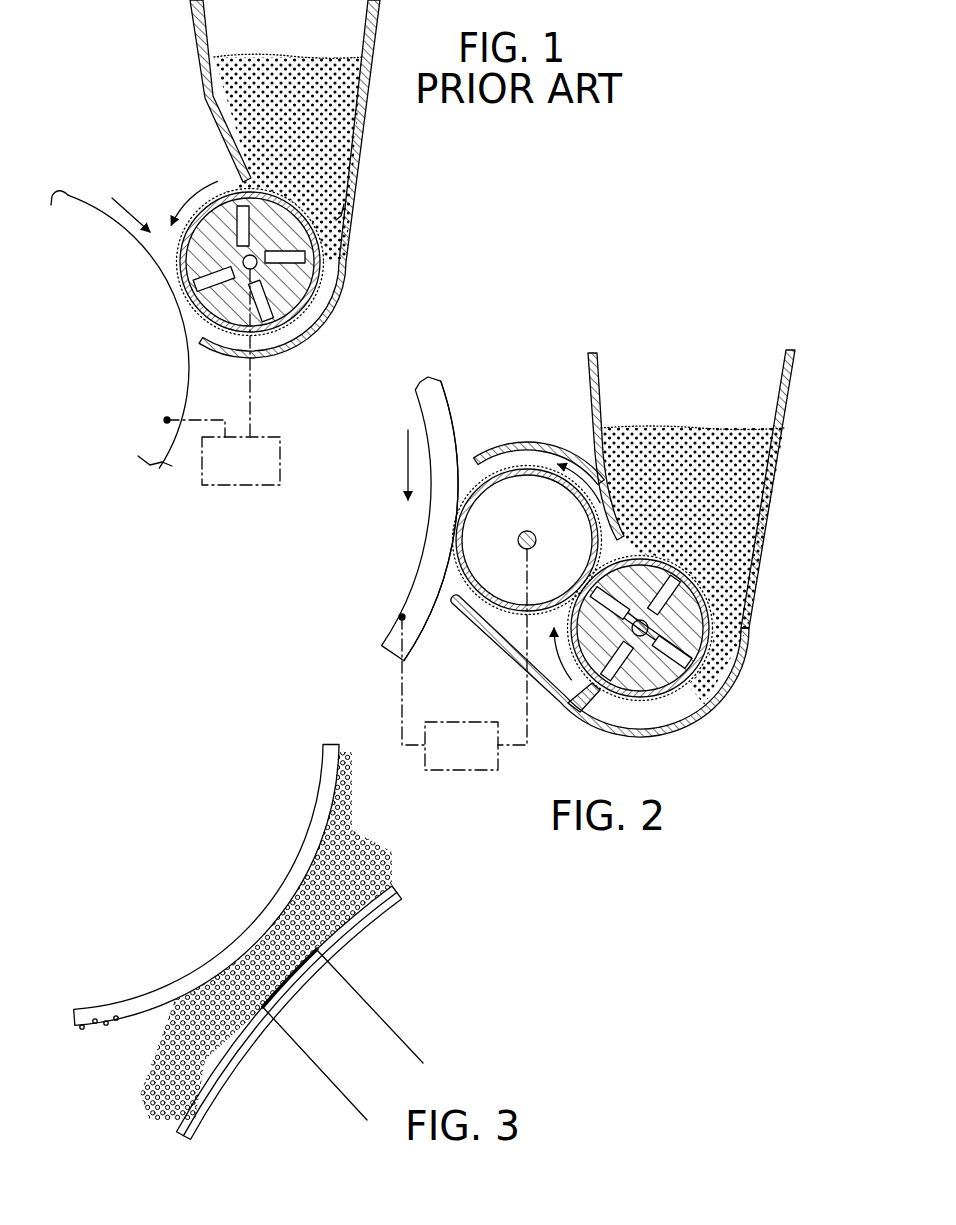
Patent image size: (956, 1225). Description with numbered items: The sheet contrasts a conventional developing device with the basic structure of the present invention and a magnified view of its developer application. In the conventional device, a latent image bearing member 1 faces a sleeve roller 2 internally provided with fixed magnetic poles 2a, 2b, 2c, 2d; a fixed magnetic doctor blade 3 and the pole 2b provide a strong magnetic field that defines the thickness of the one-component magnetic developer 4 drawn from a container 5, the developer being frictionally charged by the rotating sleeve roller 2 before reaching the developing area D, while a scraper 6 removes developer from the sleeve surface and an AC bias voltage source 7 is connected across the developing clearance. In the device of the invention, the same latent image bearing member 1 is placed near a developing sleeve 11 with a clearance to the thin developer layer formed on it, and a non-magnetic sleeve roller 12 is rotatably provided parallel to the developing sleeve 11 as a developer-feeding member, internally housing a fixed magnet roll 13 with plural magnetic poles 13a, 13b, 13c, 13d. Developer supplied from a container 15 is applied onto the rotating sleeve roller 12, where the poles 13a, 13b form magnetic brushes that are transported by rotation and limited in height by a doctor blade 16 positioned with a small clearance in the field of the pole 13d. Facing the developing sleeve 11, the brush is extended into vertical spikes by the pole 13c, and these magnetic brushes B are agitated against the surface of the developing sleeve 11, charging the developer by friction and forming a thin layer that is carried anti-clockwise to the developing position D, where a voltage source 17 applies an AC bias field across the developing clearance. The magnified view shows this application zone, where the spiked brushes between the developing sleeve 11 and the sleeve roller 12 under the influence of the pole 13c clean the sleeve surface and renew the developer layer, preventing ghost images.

In FIG. 1, the latent image bearing member 1 is at (164, 468).
In FIG. 2, the latent image bearing member 1 is at (440, 384).
In FIG. 1, the sleeve roller 2 is at (298, 318).
In FIG. 1, the fixed magnetic pole 2a is at (284, 252).
In FIG. 1, the fixed magnetic pole 2b is at (244, 222).
In FIG. 1, the fixed magnetic pole 2c is at (222, 286).
In FIG. 1, the fixed magnetic pole 2d is at (266, 297).
In FIG. 1, the fixed magnetic doctor blade 3 is at (216, 131).
In FIG. 1, the one-component magnetic developer 4 is at (352, 86).
In FIG. 2, the one-component magnetic developer 4 is at (675, 440).
In FIG. 3, the one-component magnetic developer 4 is at (337, 798).
In FIG. 1, the container 5 is at (356, 142).
In FIG. 1, the scraper 6 is at (338, 218).
In FIG. 1, the AC bias voltage source 7 is at (282, 452).
In FIG. 1, the developing area D is at (175, 283).
In FIG. 2, the developing area D is at (458, 530).
In FIG. 2, the developing sleeve 11 is at (506, 468).
In FIG. 3, the developing sleeve 11 is at (320, 778).
In FIG. 2, the non-magnetic sleeve roller 12 is at (640, 700).
In FIG. 3, the non-magnetic sleeve roller 12 is at (373, 899).
In FIG. 2, the fixed magnet roll 13 is at (680, 693).
In FIG. 2, the magnetic pole 13a is at (660, 657).
In FIG. 2, the magnetic pole 13b is at (667, 606).
In FIG. 2, the magnetic pole 13c is at (628, 594).
In FIG. 3, the magnetic pole 13c is at (372, 1018).
In FIG. 2, the magnetic pole 13d is at (614, 648).
In FIG. 2, the container 15 is at (782, 416).
In FIG. 2, the doctor blade 16 is at (598, 727).
In FIG. 2, the voltage source 17 is at (476, 721).
In FIG. 3, the magnetic brushes B is at (270, 913).